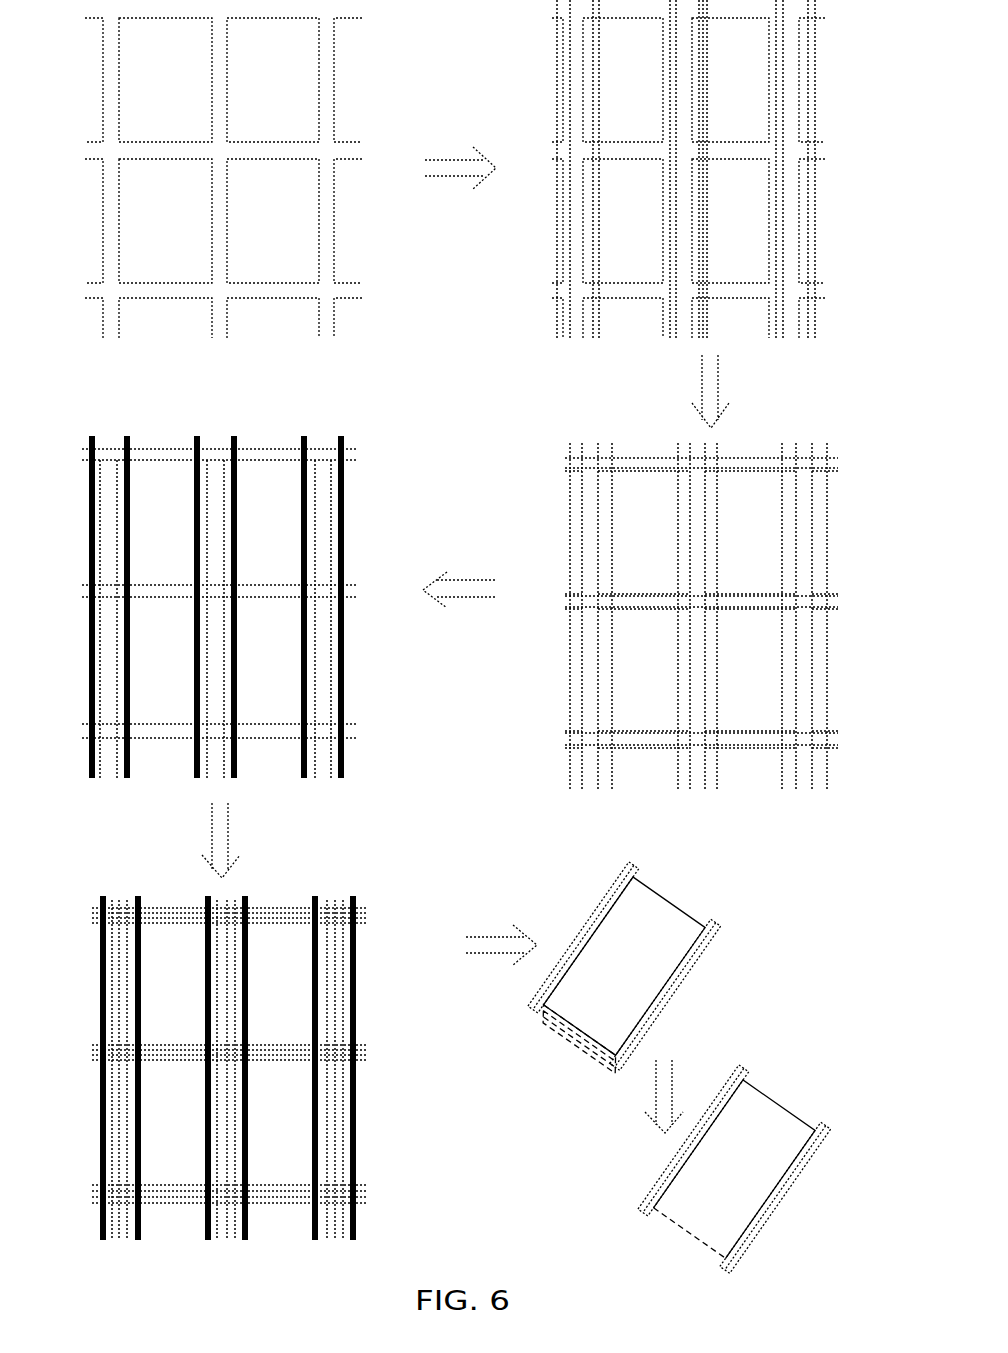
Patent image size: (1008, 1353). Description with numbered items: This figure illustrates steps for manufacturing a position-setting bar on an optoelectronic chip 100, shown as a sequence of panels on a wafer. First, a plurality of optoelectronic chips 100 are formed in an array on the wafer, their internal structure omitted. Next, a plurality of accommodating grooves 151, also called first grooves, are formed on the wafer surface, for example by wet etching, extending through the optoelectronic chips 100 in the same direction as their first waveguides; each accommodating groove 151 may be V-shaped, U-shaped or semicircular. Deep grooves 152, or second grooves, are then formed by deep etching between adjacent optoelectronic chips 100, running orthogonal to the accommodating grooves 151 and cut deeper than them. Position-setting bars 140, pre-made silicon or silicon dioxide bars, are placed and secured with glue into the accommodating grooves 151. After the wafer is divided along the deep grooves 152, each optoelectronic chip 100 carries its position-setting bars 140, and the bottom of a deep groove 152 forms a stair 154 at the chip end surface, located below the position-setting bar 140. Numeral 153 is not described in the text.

The optoelectronic chip 100 is at (297, 116).
The position-setting bar 140 is at (350, 732).
The accommodating groove 151 is at (593, 232).
The deep groove 152 is at (318, 585).
The third strip 153 is at (357, 1018).
The stair 154 is at (553, 1027).